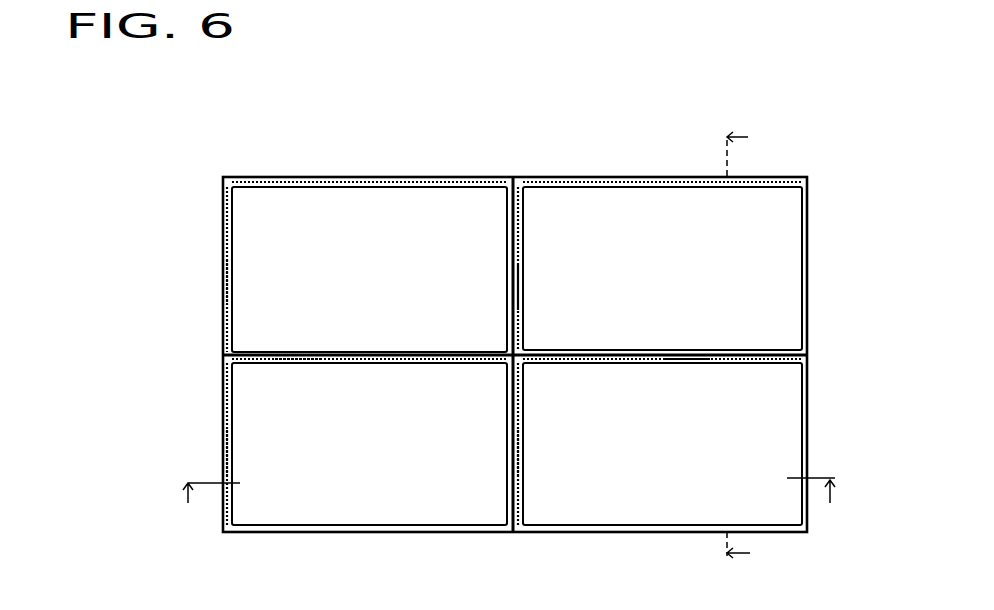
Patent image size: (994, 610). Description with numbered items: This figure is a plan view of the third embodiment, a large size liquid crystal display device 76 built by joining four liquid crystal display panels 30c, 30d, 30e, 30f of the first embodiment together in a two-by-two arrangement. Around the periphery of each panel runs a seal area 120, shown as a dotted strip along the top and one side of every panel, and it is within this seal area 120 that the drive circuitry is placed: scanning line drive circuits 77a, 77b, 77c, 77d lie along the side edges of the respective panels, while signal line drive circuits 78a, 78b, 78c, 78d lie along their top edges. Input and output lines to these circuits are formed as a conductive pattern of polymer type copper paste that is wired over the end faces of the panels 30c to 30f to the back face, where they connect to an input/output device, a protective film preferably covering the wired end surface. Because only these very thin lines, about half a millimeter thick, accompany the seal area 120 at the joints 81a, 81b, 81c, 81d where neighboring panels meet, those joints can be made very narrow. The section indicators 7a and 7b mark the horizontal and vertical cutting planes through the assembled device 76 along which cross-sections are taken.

The large size liquid crystal display device 76 is at (518, 80).
The seal area 120 is at (222, 233).
The liquid crystal display panel 30c is at (450, 177).
The liquid crystal display panel 30d is at (587, 177).
The liquid crystal display panel 30e is at (315, 533).
The liquid crystal display panel 30f is at (637, 533).
The signal line drive circuit 78a is at (322, 177).
The signal line drive circuit 78b is at (655, 177).
The signal line drive circuit 78c is at (293, 363).
The signal line drive circuit 78d is at (690, 363).
The scanning line drive circuit 77a is at (220, 283).
The scanning line drive circuit 77b is at (520, 288).
The scanning line drive circuit 77c is at (222, 455).
The scanning line drive circuit 77d is at (520, 453).
The joint 81a is at (343, 352).
The joint 81b is at (653, 350).
The joint 81c is at (513, 258).
The joint 81d is at (513, 437).
The section line 7a is at (508, 488).
The section line 7b is at (732, 353).